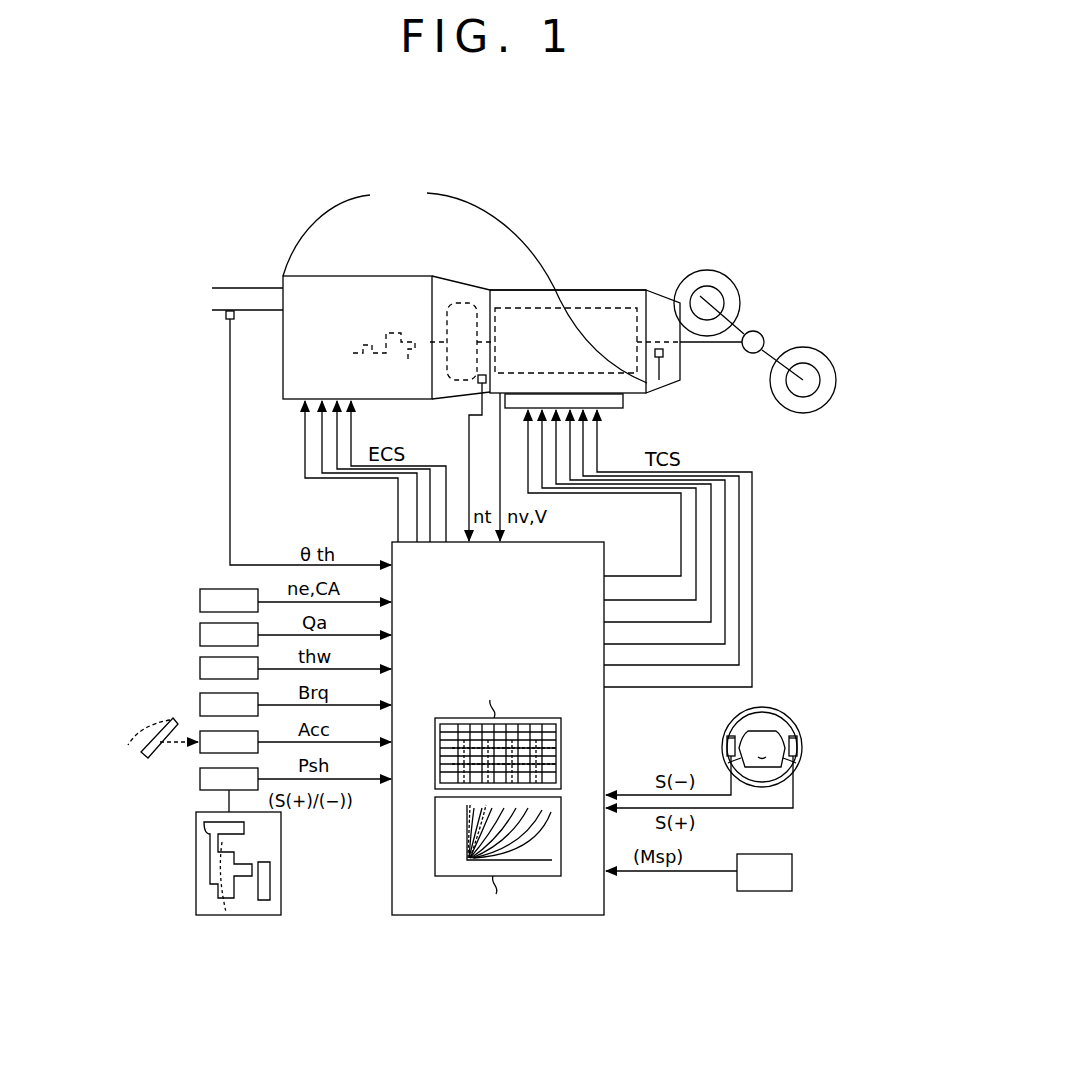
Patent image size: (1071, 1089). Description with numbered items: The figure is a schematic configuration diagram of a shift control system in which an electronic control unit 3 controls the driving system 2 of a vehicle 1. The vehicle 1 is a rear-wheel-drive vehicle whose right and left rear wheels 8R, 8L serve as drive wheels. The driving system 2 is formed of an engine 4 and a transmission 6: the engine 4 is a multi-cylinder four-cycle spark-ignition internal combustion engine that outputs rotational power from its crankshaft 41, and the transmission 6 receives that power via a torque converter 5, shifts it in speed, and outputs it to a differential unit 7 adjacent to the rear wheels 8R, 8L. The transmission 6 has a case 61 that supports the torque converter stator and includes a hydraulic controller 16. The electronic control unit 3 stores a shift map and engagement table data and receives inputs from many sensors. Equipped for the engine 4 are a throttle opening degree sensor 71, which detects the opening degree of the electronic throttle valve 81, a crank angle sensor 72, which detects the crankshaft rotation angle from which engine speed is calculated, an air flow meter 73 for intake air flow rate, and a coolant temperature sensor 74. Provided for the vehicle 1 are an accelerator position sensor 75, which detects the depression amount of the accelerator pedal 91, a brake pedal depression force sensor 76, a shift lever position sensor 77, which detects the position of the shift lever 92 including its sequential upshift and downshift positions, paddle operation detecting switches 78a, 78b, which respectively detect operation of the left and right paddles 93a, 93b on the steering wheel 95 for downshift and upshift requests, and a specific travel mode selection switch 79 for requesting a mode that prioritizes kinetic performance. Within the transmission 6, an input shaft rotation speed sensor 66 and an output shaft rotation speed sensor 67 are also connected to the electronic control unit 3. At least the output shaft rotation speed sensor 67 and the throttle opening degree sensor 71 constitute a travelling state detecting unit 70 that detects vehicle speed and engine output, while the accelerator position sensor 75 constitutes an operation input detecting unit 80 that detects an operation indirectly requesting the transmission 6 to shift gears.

The vehicle 1 is at (507, 231).
The driving system 2 is at (576, 289).
The electronic control unit 3 is at (578, 542).
The engine 4 is at (355, 276).
The torque converter 5 is at (466, 302).
The transmission 6 is at (549, 306).
The differential unit 7 is at (760, 331).
The right rear wheel 8R is at (720, 270).
The left rear wheel 8L is at (815, 347).
The hydraulic controller 16 is at (623, 404).
The crankshaft 41 is at (385, 366).
The case 61 is at (598, 290).
The input shaft rotation speed sensor 66 is at (478, 381).
The output shaft rotation speed sensor 67 is at (663, 353).
The travelling state detecting unit 70 is at (465, 282).
The throttle opening degree sensor 71 is at (226, 318).
The crank angle sensor 72 is at (213, 589).
The air flow meter 73 is at (210, 623).
The coolant temperature sensor 74 is at (210, 657).
The accelerator position sensor 75 is at (200, 746).
The brake pedal depression force sensor 76 is at (210, 693).
The shift lever position sensor 77 is at (200, 781).
The left paddle operation detecting switch 78a is at (727, 750).
The right paddle operation detecting switch 78b is at (797, 750).
The specific travel mode selection switch 79 is at (792, 871).
The operation input detecting unit 80 is at (100, 790).
The electronic throttle valve 81 is at (226, 306).
The accelerator pedal 91 is at (172, 718).
The shift lever 92 is at (226, 918).
The left paddle 93a is at (730, 735).
The right paddle 93b is at (797, 739).
The steering wheel 95 is at (765, 708).